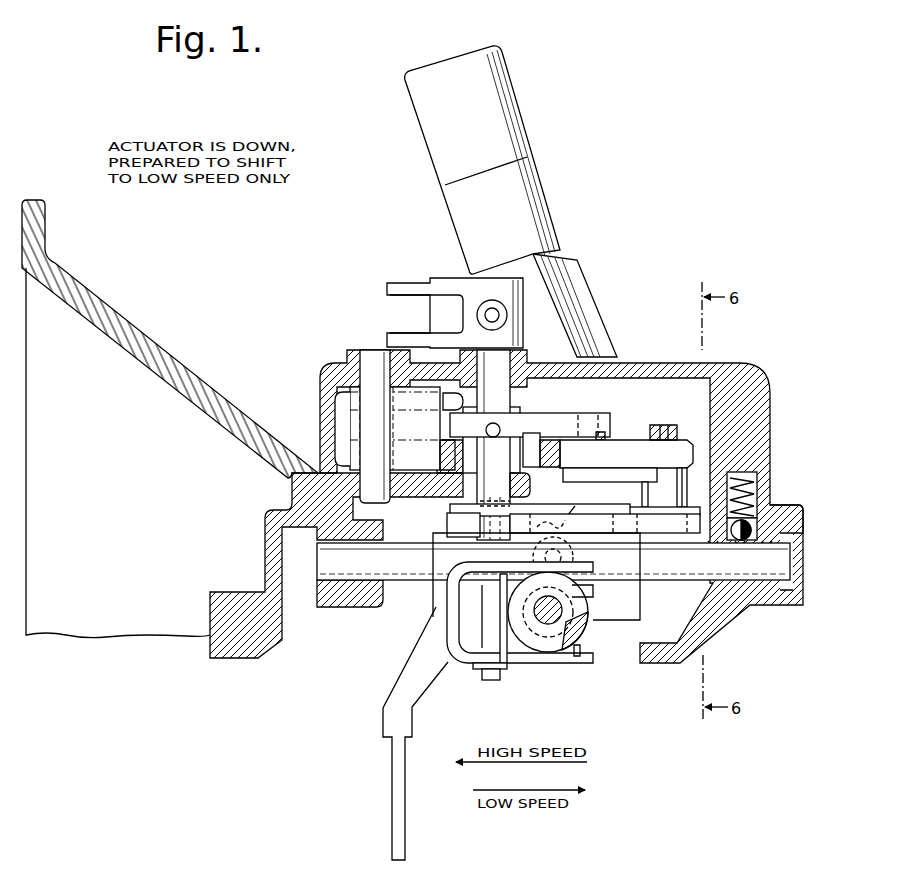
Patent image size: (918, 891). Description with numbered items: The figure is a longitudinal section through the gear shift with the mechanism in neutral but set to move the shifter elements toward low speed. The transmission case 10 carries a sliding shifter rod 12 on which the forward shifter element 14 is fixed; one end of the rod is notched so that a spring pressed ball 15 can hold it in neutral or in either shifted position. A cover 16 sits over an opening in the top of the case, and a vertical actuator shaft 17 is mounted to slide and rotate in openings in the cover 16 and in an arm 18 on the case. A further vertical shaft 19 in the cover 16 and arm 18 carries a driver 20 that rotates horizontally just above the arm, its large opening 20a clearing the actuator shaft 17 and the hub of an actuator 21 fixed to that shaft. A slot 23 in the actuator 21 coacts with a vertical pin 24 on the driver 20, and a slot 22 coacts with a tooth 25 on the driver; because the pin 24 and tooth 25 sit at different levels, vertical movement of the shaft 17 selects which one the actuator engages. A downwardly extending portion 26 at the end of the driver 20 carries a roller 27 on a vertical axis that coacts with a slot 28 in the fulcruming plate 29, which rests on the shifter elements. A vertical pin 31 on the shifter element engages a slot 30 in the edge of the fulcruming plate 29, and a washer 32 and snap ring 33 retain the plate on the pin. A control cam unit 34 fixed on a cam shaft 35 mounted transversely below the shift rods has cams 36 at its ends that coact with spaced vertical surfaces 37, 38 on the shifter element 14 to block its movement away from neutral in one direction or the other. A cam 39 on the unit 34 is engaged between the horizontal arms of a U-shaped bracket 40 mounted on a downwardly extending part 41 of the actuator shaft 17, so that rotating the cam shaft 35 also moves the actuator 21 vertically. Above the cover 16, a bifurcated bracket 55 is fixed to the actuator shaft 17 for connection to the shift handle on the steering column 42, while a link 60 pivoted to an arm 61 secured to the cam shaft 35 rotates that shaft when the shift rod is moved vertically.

The transmission case 10 is at (232, 664).
The sliding shifter rod 12 is at (403, 583).
The forward shifter element 14 is at (410, 678).
The spring pressed ball 15 is at (771, 520).
The cover 16 is at (641, 360).
The actuator shaft 17 is at (506, 392).
The arm 18 is at (532, 490).
The vertical shaft 19 is at (370, 356).
The driver 20 is at (628, 438).
The large opening 20a is at (626, 454).
The actuator 21 is at (548, 416).
The slot 22 is at (455, 426).
The slot 23 is at (582, 414).
The vertical pin 24 is at (601, 433).
The tooth 25 is at (452, 397).
The downwardly extending portion 26 is at (683, 487).
The roller 27 is at (688, 538).
The slot 28 is at (618, 533).
The fulcruming plate 29 is at (587, 523).
The slots 30 is at (470, 523).
The vertical pin 31 is at (492, 517).
The washers 32 is at (522, 511).
The snap rings 33 is at (478, 503).
The control cam unit 34 is at (577, 654).
The cam shaft 35 is at (556, 608).
The cams 36 is at (583, 642).
The vertical surface 37 is at (536, 576).
The vertical surface 38 is at (575, 590).
The cam 39 is at (506, 640).
The U-shaped bracket 40 is at (448, 615).
The downwardly extending part 41 is at (491, 672).
The steering column 42 is at (470, 259).
The bifurcated bracket 55 is at (402, 283).
The link 60 is at (582, 503).
The arm 61 is at (542, 556).